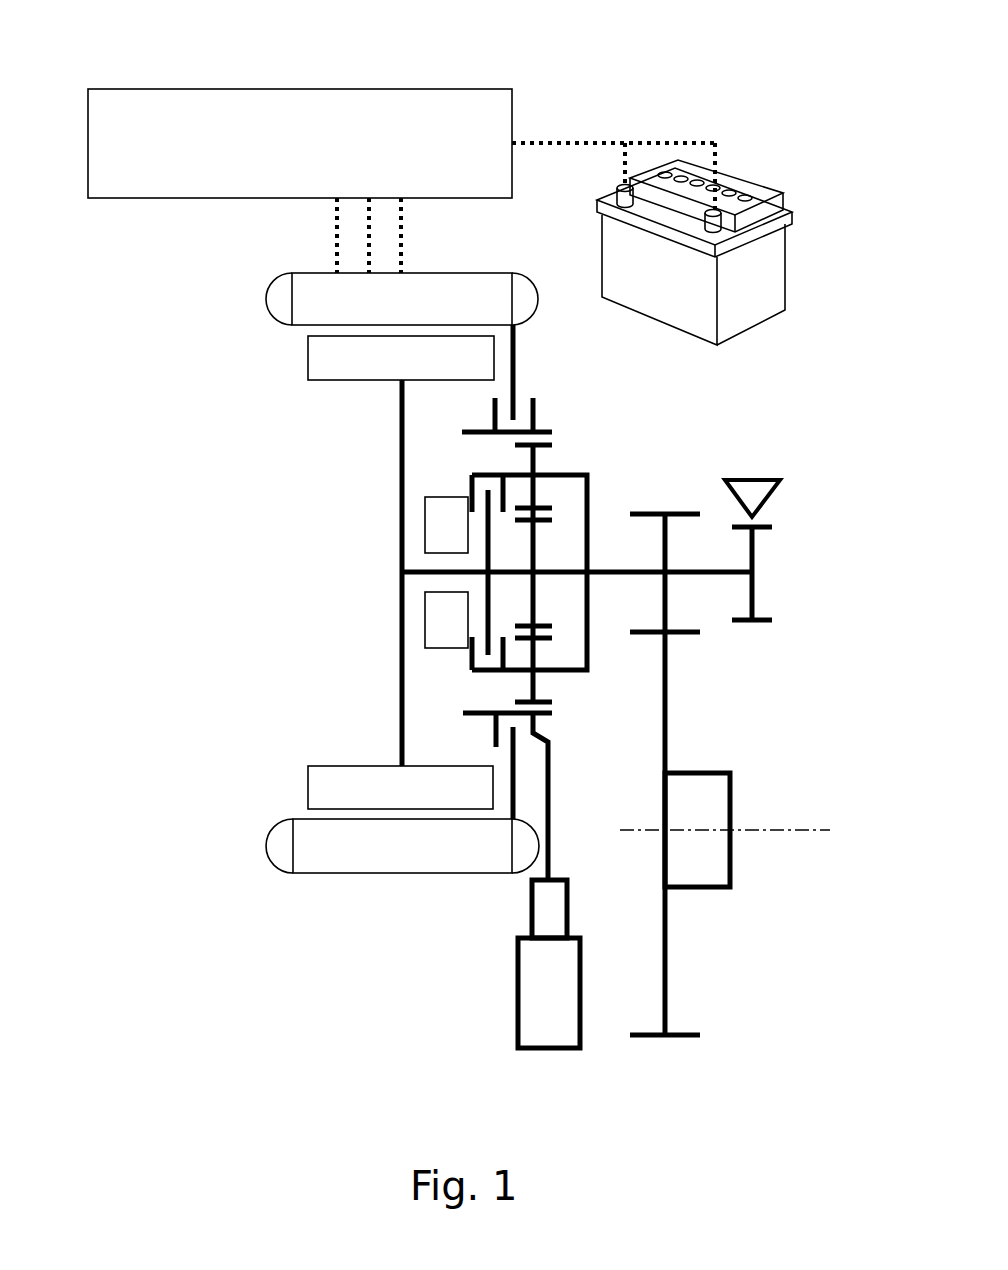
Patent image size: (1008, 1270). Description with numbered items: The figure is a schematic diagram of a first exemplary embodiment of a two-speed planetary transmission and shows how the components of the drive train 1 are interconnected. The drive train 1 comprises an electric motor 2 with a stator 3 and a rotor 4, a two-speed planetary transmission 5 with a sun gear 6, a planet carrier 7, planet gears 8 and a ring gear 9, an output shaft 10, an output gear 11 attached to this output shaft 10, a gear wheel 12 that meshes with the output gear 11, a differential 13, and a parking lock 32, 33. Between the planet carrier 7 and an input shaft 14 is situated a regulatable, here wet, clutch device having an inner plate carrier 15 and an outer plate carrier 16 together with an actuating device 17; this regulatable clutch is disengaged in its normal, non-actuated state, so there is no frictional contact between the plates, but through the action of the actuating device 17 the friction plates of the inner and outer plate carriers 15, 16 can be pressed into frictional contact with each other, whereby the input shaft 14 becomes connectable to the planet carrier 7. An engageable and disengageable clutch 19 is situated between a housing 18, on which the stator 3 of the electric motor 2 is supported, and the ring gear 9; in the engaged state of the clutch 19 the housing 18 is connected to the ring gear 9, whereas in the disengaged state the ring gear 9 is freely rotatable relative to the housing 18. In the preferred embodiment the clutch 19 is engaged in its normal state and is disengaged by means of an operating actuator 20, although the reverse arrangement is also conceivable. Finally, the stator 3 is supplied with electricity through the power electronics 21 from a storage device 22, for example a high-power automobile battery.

The drive train 1 is at (795, 405).
The electric motor 2 is at (394, 874).
The stator 3 is at (317, 838).
The rotor 4 is at (402, 520).
The two-speed planetary transmission 5 is at (667, 430).
The sun gear 6 is at (540, 548).
The planet carrier 7 is at (589, 648).
The planet gears 8 is at (538, 683).
The ring gear 9 is at (472, 710).
The output shaft 10 is at (727, 568).
The output gear 11 is at (685, 510).
The gear wheel 12 is at (680, 1040).
The differential 13 is at (731, 860).
The input shaft 14 is at (420, 570).
The inner plate carrier 15 is at (472, 662).
The outer plate carrier 16 is at (488, 474).
The actuating device 17 is at (442, 505).
The housing 18 is at (516, 350).
The engageable and disengageable clutch 19 is at (537, 408).
The operating actuator 20 is at (545, 1050).
The power electronics 21 is at (258, 112).
The storage device 22 is at (745, 195).
The parking lock 32 is at (801, 498).
The parking lock 33 is at (753, 492).